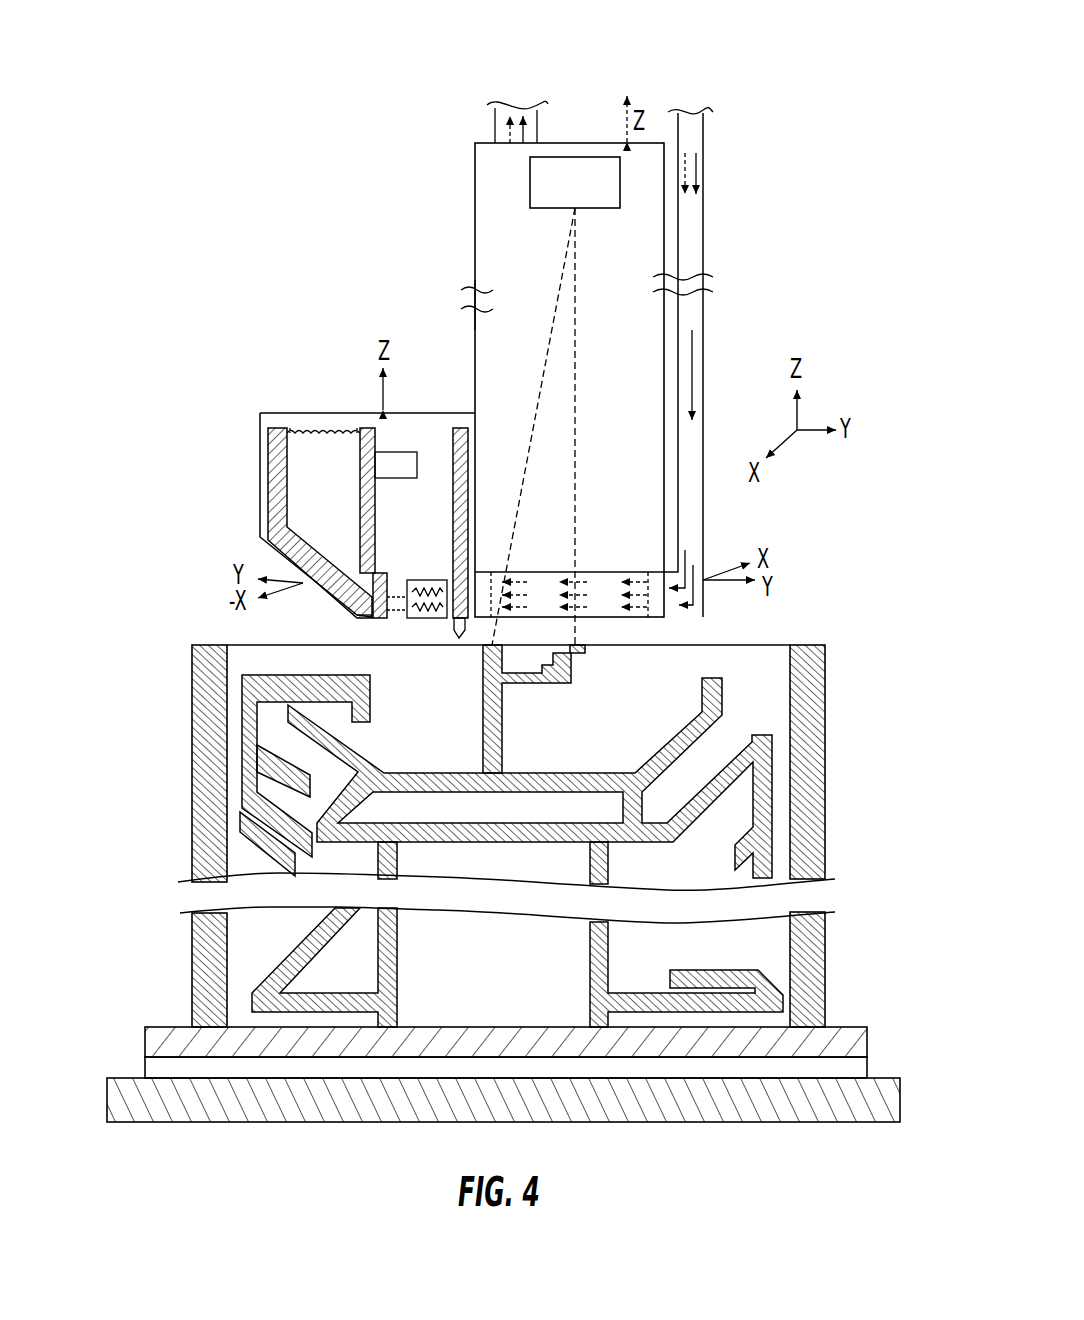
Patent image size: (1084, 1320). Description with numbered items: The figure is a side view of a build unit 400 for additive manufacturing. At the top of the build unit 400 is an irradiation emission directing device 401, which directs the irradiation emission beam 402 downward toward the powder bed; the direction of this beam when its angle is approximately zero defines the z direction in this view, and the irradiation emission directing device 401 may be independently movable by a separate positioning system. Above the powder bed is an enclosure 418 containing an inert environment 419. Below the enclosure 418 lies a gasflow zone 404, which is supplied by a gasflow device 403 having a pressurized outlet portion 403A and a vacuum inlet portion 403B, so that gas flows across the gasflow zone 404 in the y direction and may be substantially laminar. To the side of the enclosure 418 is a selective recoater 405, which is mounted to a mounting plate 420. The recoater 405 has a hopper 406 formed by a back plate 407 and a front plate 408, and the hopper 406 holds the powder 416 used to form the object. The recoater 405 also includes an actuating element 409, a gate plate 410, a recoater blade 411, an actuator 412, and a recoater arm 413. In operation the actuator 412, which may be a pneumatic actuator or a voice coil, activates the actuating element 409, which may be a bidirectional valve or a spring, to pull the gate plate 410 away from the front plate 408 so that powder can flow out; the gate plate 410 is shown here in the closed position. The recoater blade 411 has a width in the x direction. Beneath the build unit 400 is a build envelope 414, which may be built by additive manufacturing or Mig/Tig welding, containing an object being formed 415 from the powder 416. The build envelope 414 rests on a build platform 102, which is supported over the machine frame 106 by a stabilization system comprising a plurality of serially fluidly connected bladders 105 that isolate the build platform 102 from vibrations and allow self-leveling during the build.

The build unit 400 is at (747, 105).
The irradiation emission directing device 401 is at (575, 157).
The energy beam 402 is at (578, 316).
The gasflow device 403 is at (633, 617).
The pressurized outlet portion 403A is at (657, 582).
The vacuum inlet portion 403B is at (482, 582).
The gasflow zone 404 is at (603, 582).
The recoater 405 is at (470, 326).
The hopper 406 is at (373, 412).
The back plate 407 is at (268, 470).
The front plate 408 is at (375, 447).
The actuating element 409 is at (385, 597).
The gate plate 410 is at (383, 617).
The recoater blade 411 is at (453, 618).
The actuator 412 is at (428, 580).
The recoater arm 413 is at (460, 428).
The build envelope 414 is at (825, 797).
The object being formed 415 is at (722, 693).
The powder 416 is at (300, 433).
The enclosure 418 is at (475, 215).
The inert environment 419 is at (472, 311).
The mounting plate 420 is at (260, 440).
The build platform 102 is at (160, 1038).
The bladder 105 is at (852, 1068).
The machine frame 106 is at (680, 1122).